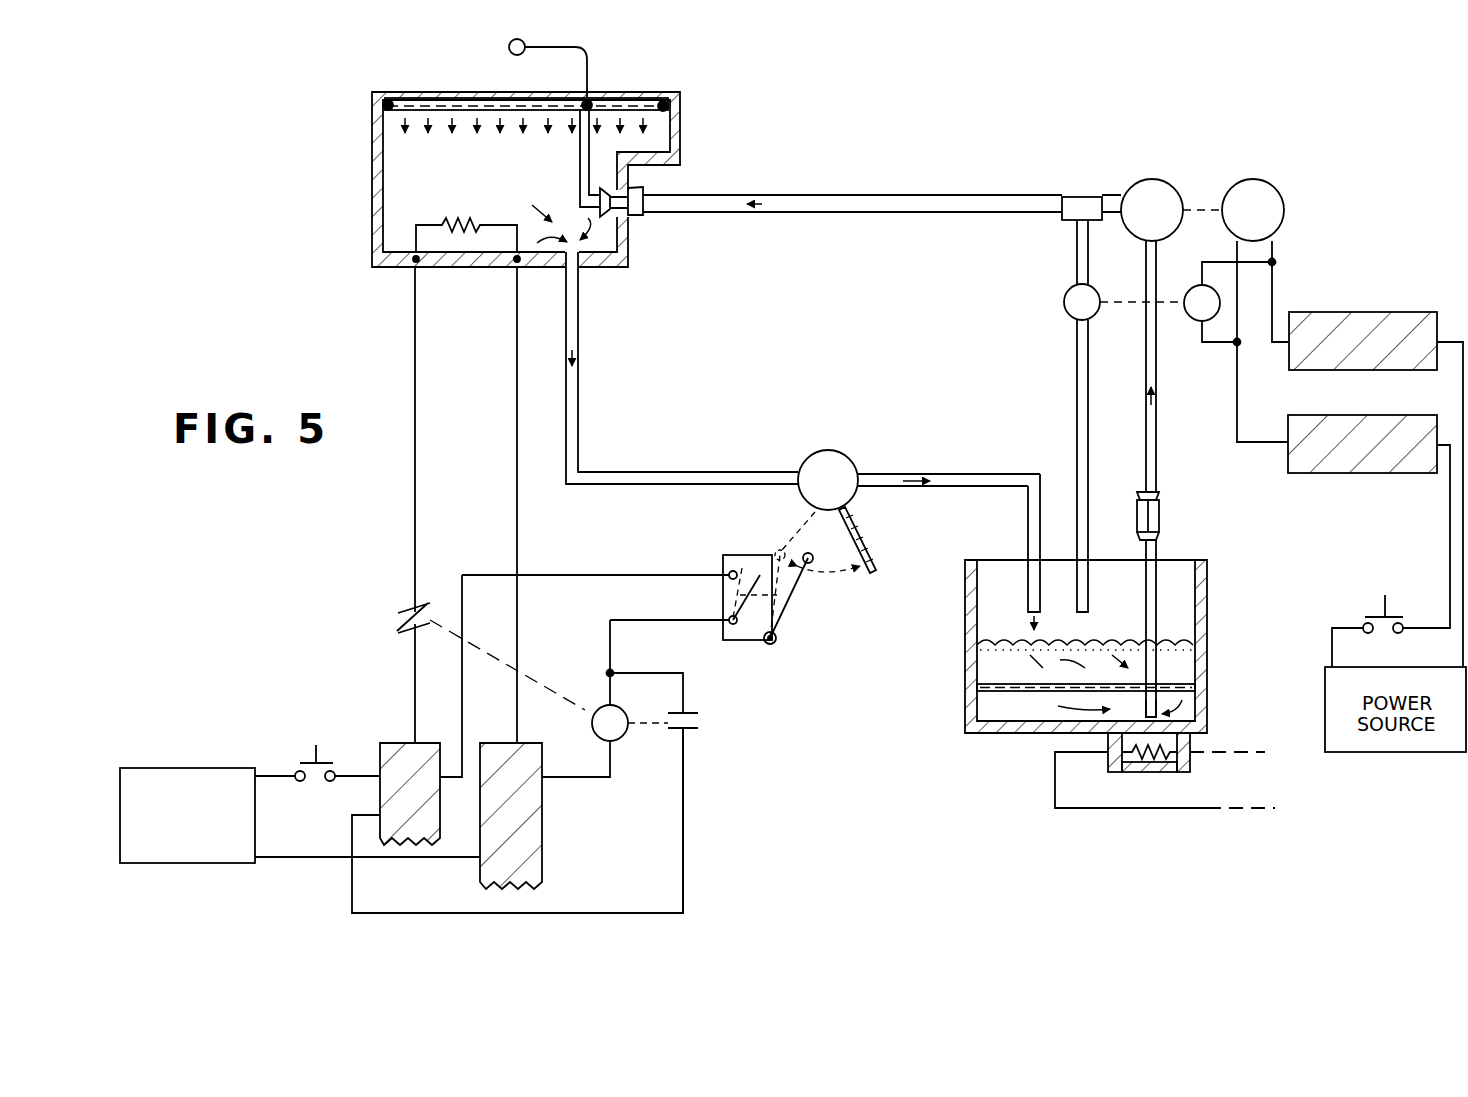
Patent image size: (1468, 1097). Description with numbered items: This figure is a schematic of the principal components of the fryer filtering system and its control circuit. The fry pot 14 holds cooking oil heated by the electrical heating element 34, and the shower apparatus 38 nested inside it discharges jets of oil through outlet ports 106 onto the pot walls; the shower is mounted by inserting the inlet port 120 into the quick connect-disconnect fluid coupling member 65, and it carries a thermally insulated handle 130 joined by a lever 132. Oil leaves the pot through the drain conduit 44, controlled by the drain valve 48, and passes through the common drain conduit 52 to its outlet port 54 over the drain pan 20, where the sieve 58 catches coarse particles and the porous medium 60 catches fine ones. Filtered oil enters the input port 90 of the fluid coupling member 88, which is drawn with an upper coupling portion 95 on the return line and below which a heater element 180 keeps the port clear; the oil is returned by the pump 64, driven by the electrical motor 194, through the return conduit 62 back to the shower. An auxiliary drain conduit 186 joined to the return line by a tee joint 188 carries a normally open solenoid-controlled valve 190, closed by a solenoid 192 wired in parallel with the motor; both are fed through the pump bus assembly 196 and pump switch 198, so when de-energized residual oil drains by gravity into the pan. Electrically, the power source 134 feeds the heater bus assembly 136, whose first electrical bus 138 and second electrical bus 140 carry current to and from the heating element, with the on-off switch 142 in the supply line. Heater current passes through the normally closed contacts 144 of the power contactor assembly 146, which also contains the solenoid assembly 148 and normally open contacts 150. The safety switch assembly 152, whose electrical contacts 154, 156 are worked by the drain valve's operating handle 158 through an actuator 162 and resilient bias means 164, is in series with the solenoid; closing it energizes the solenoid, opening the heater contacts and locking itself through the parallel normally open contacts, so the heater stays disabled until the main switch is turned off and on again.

The fry pot unit 14 is at (372, 140).
The drain pan 20 is at (1208, 612).
The electrical resistance heating element 34 is at (452, 222).
The shower apparatus 38 is at (542, 91).
The drain conduit 44 is at (578, 346).
The drain valve 48 is at (858, 474).
The common drain conduit 52 is at (1042, 484).
The outlet port 54 is at (1026, 622).
The sieve 58 is at (1098, 636).
The porous medium 60 is at (1176, 688).
The return conduit 62 is at (830, 212).
The pump 64 is at (1180, 193).
The quick connect-disconnect fluid coupling member 65 is at (622, 207).
The fluid coupling member 88 is at (1160, 518).
The input port 90 is at (1150, 703).
The coupling flange 95 is at (1160, 506).
The outlet ports 106 is at (463, 104).
The inlet port 120 is at (597, 208).
The thermally insulated handle 130 is at (513, 40).
The lever 132 is at (590, 62).
The power source 134 is at (158, 768).
The heater bus assembly 136 is at (640, 908).
The first electrical bus 138 is at (428, 808).
The second electrical bus 140 is at (530, 808).
The on-off switch 142 is at (308, 762).
The normally closed contacts 144 is at (397, 626).
The power contactor assembly 146 is at (593, 677).
The solenoid assembly 148 is at (625, 740).
The normally open contacts 150 is at (700, 730).
The safety switch assembly 152 is at (853, 643).
The electrical contact 154 is at (722, 583).
The electrical contact 156 is at (722, 627).
The operating handle 158 is at (878, 572).
The actuator 162 is at (800, 592).
The resilient bias means 164 is at (766, 645).
The heater element 180 is at (1192, 762).
The auxiliary drain conduit 186 is at (1075, 386).
The tee joint 188 is at (1073, 212).
The normally open solenoid-controlled valve 190 is at (1068, 312).
The solenoid 192 is at (1195, 322).
The electrical motor 194 is at (1280, 193).
The pump bus assembly 196 is at (1446, 295).
The pump switch 198 is at (1395, 612).